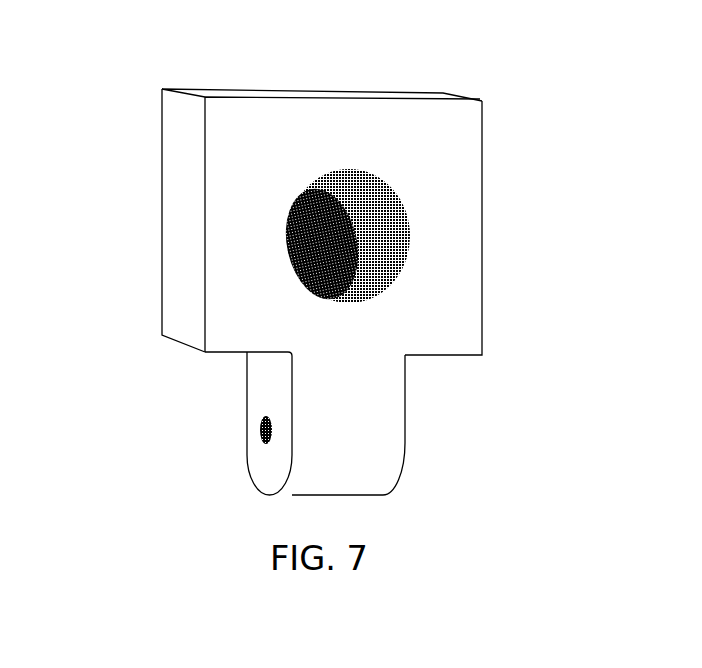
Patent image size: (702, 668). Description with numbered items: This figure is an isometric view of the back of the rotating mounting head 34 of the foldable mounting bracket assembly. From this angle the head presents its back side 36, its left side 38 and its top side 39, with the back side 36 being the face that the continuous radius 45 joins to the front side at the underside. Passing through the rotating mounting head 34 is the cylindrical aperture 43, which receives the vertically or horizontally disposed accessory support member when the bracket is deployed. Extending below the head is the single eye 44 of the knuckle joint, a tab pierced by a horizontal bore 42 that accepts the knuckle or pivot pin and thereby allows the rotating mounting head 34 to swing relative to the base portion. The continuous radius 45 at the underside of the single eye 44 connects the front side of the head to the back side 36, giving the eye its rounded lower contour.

The rotating mounting head 34 is at (445, 114).
The back side 36 is at (238, 125).
The left side 38 is at (177, 192).
The top side 39 is at (361, 88).
The horizontal bore 42 is at (253, 436).
The cylindrical aperture 43 is at (377, 218).
The single eye of the knuckle joint 44 is at (265, 370).
The continuous radius 45 is at (363, 474).